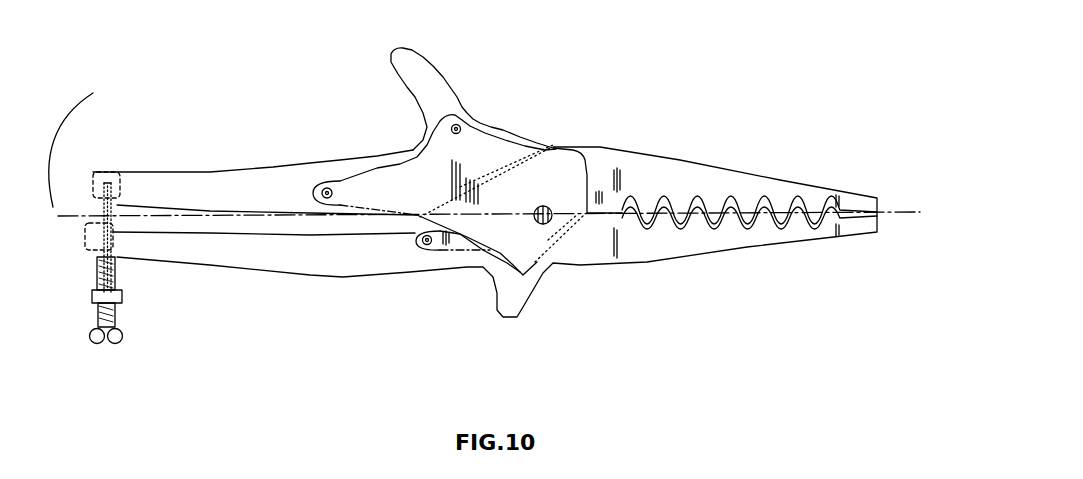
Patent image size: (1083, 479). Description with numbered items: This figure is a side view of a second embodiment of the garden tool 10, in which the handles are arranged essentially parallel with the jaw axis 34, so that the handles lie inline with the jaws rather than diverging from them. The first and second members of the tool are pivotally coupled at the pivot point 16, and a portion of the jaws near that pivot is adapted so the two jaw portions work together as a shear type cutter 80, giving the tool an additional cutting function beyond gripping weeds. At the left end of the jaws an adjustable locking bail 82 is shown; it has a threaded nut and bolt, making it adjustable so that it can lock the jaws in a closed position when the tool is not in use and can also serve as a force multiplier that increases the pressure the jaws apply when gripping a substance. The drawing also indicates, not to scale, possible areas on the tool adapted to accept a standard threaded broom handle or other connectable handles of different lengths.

The garden tool 10 is at (484, 192).
The pivot point 16 is at (552, 246).
The jaw axis 34 is at (87, 145).
The shear type cutter 80 is at (606, 203).
The bail 82 is at (139, 340).